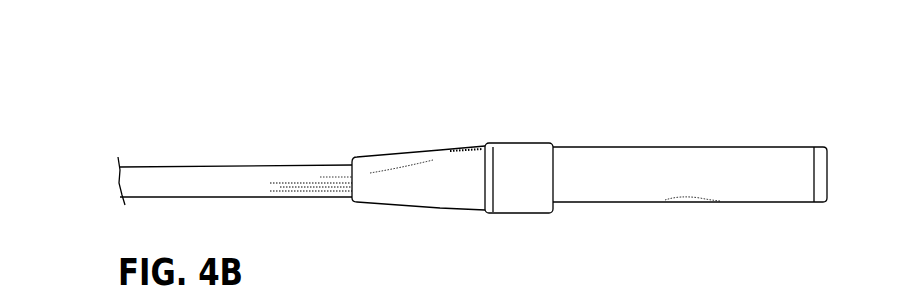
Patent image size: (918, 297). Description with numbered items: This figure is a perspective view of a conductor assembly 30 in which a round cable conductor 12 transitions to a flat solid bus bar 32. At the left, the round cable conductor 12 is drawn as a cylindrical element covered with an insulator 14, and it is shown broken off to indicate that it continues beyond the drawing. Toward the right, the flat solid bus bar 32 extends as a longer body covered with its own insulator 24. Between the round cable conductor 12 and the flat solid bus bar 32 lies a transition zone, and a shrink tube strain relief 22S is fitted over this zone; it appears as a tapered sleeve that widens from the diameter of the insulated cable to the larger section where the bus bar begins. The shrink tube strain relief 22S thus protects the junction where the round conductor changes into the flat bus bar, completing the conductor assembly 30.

The round cable conductor 12 is at (118, 180).
The insulator 14 is at (185, 166).
The shrink tube strain relief 22S is at (465, 149).
The insulator 24 is at (665, 146).
The conductor assembly 30 is at (211, 98).
The flat solid bus bar 32 is at (821, 146).